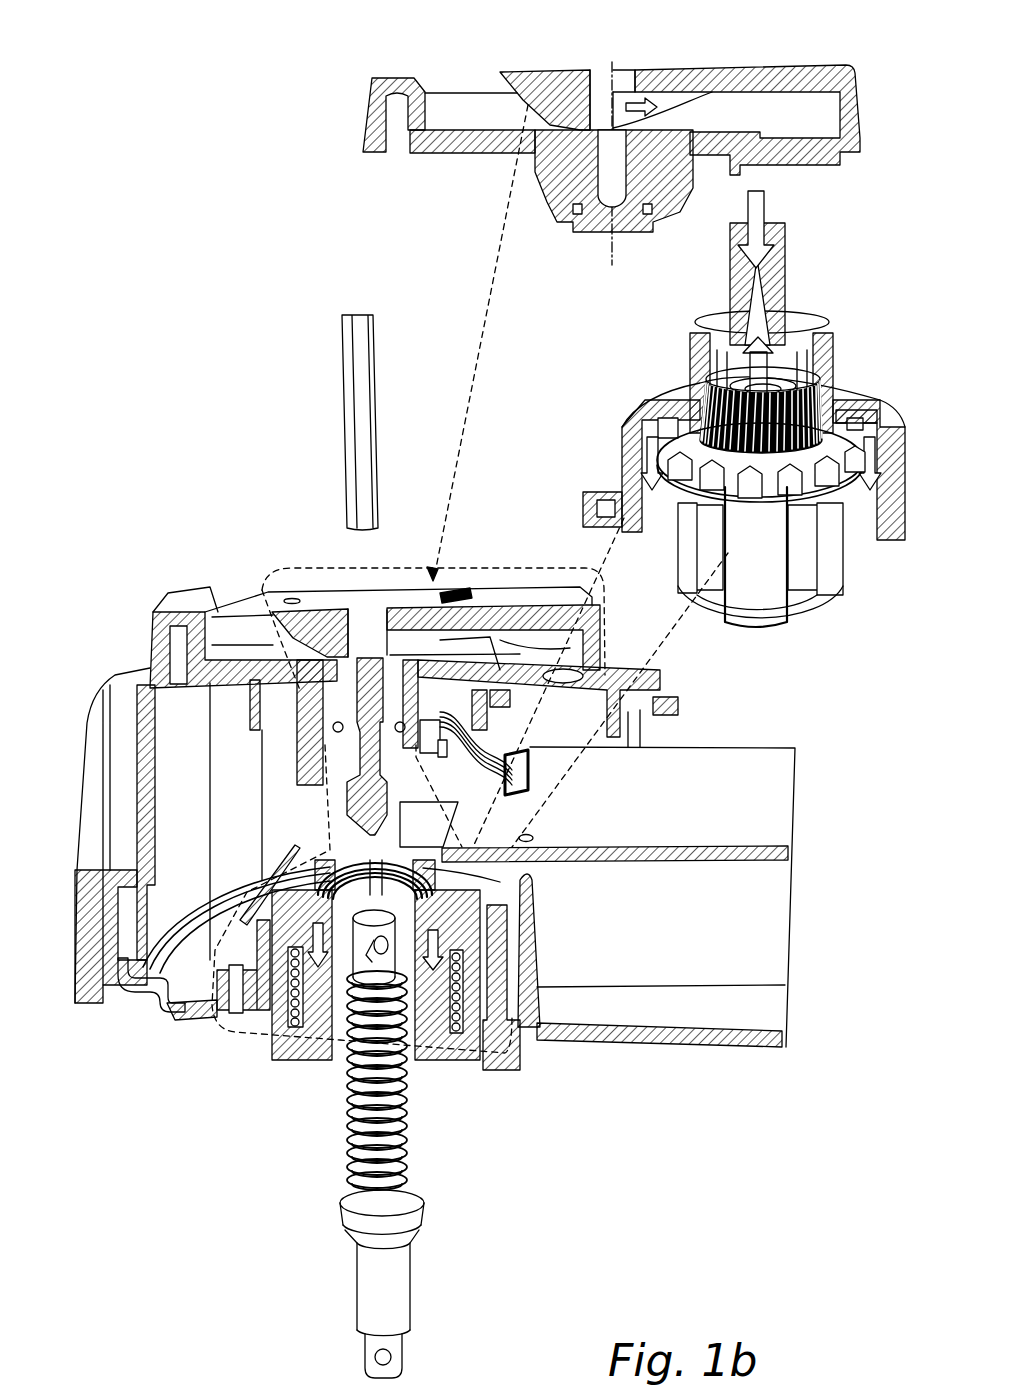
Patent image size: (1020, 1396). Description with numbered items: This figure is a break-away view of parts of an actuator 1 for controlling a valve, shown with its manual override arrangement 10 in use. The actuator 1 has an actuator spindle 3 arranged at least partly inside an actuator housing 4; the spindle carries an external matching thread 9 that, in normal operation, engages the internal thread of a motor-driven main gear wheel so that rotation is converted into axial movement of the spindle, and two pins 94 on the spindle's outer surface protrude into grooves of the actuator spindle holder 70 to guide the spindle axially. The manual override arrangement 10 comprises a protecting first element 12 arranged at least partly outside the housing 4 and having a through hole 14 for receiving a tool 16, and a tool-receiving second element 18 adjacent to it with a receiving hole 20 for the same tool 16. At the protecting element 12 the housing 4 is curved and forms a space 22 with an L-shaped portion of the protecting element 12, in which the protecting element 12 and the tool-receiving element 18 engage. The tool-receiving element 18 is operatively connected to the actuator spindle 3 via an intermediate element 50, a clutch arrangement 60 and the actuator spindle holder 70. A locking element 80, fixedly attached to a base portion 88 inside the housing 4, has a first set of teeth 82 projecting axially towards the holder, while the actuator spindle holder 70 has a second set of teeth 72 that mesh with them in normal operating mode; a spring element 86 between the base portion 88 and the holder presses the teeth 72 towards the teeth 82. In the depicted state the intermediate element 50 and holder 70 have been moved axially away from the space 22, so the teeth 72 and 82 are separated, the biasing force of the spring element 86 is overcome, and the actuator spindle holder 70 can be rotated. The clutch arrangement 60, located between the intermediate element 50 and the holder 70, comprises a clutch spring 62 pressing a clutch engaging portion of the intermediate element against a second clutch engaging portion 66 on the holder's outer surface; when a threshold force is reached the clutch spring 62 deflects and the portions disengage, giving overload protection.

The actuator 1 is at (92, 535).
The actuator spindle 3 is at (328, 1172).
The actuator housing 4 is at (80, 783).
The matching thread 9 is at (345, 1085).
The manual override arrangement 10 is at (303, 812).
The protecting first element 12 is at (598, 90).
The through hole 14 is at (358, 622).
The tool 16 is at (350, 395).
The tool-receiving second element 18 is at (637, 224).
The receiving hole 20 is at (605, 195).
The space 22 is at (793, 117).
The intermediate element 50 is at (785, 235).
The clutch arrangement 60 is at (632, 390).
The clutch spring 62 is at (683, 417).
The second clutch engaging portion 66 is at (710, 440).
The actuator spindle holder 70 is at (822, 590).
The second set of teeth 72 is at (792, 590).
The locking element 80 is at (878, 540).
The first set of teeth 82 is at (855, 420).
The spring element 86 is at (487, 1040).
The base portion 88 is at (200, 1022).
The pins 94 is at (353, 973).